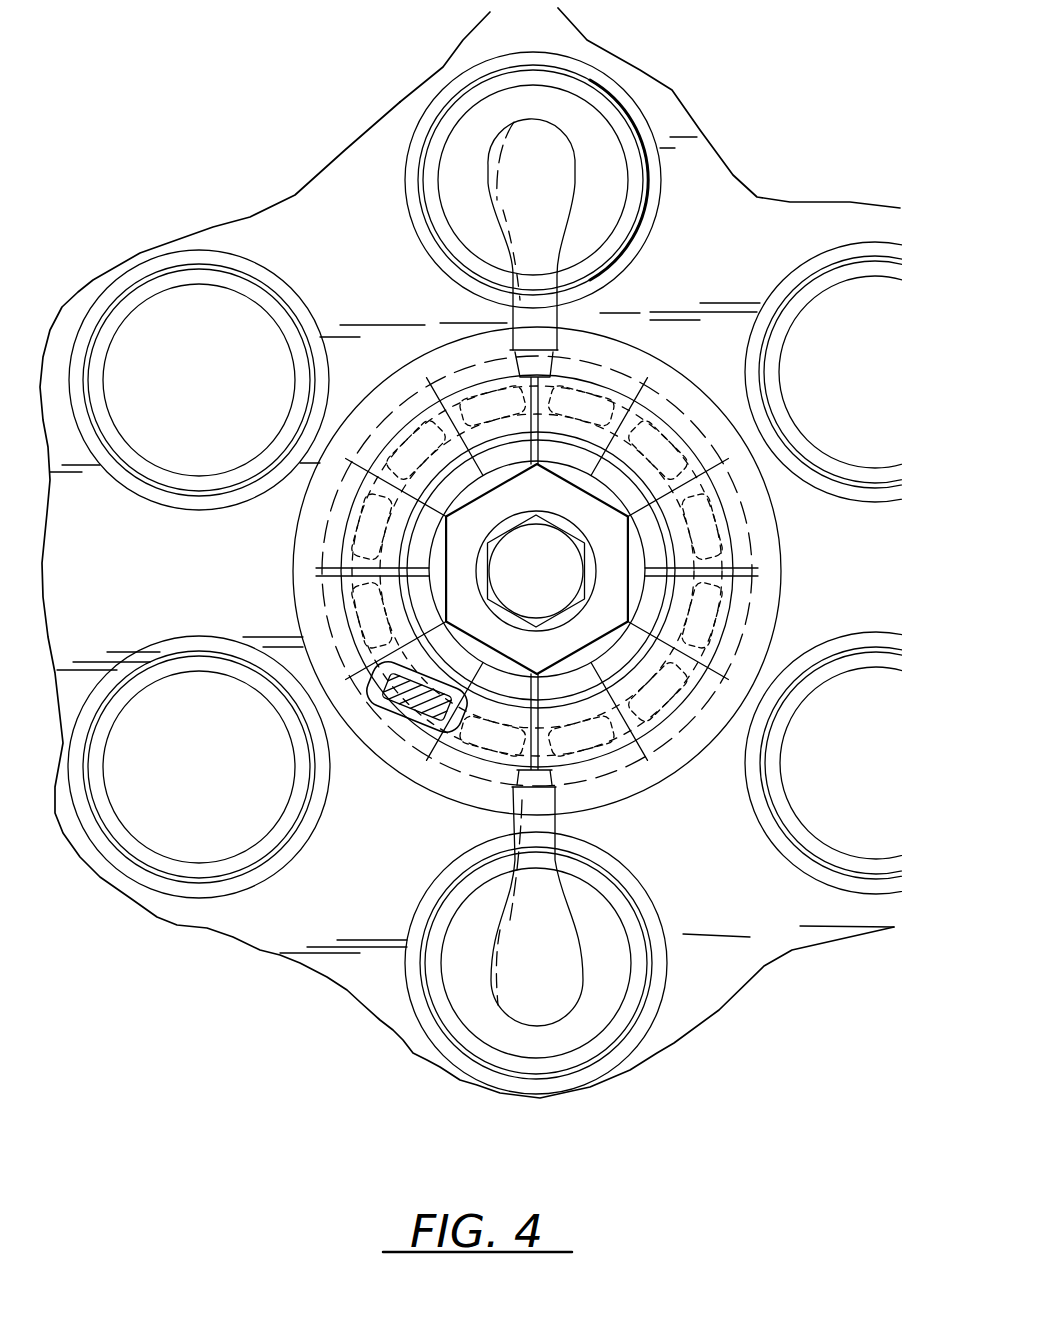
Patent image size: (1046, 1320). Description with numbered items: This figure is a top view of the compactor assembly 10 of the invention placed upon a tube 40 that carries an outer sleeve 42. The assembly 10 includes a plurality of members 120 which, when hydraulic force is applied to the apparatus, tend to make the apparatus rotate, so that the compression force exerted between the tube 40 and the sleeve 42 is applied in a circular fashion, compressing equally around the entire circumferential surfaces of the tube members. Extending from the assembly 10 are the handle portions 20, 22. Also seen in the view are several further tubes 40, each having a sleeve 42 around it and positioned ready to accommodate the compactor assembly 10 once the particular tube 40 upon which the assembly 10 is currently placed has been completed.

The assembly 10 is at (694, 229).
The handle portion 20 is at (557, 150).
The handle portion 22 is at (527, 977).
The tube 40 is at (503, 83).
The outer sleeve 42 is at (470, 78).
The member 120 is at (440, 712).